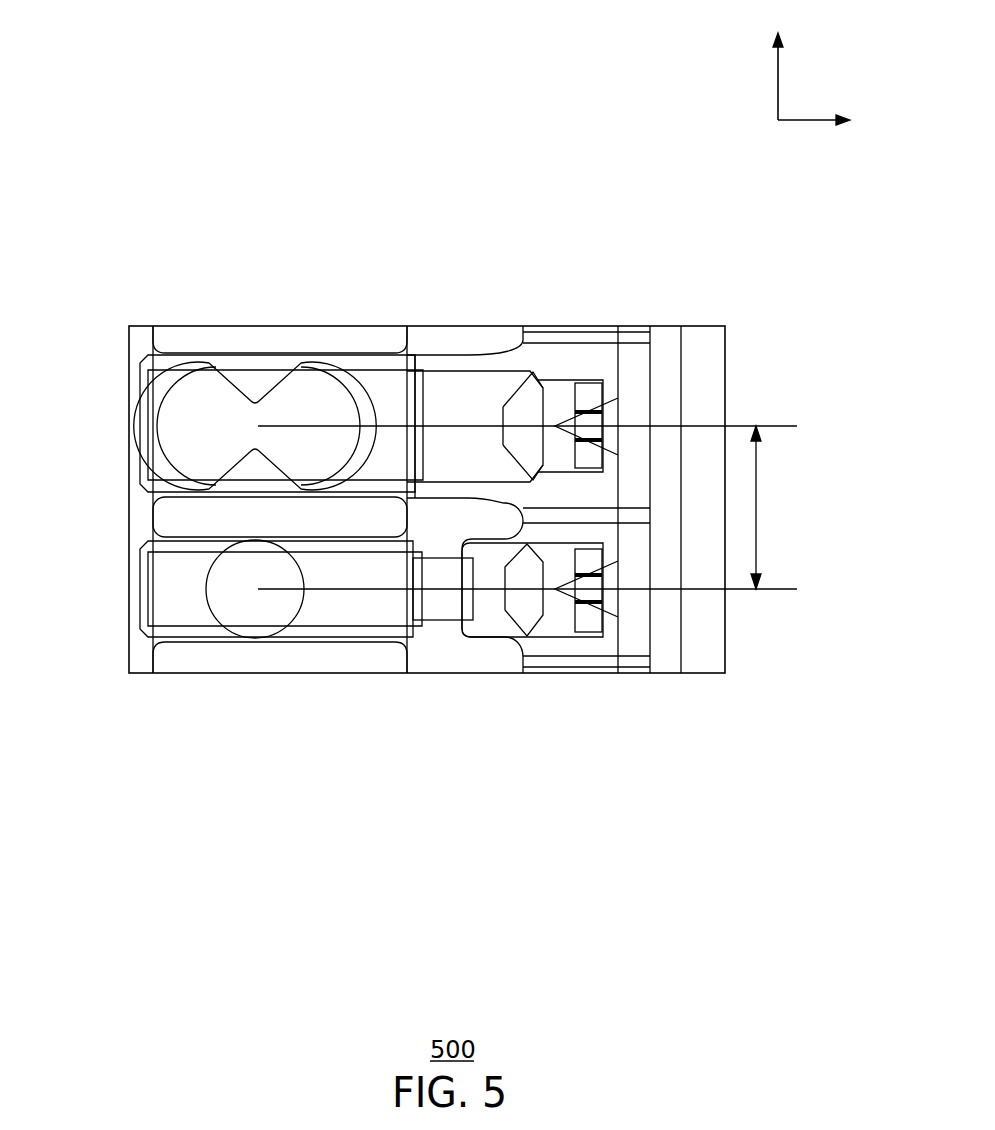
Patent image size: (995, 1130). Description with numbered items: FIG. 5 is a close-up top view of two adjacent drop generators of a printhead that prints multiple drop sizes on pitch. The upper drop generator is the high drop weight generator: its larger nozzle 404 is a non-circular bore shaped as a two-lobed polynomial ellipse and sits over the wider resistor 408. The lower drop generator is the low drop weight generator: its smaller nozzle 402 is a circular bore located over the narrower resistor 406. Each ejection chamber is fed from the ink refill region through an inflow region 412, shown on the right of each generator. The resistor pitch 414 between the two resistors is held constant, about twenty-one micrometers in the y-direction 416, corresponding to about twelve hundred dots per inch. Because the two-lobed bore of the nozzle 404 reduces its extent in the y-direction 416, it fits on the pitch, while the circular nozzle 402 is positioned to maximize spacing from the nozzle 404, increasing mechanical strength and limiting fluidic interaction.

The smaller nozzle 402 is at (210, 606).
The larger nozzle 404 is at (163, 381).
The narrower resistor 406 is at (175, 627).
The wider resistor 408 is at (253, 365).
The inflow region 412 is at (443, 575).
The resistor pitch 414 is at (758, 499).
The y-direction 416 is at (778, 82).